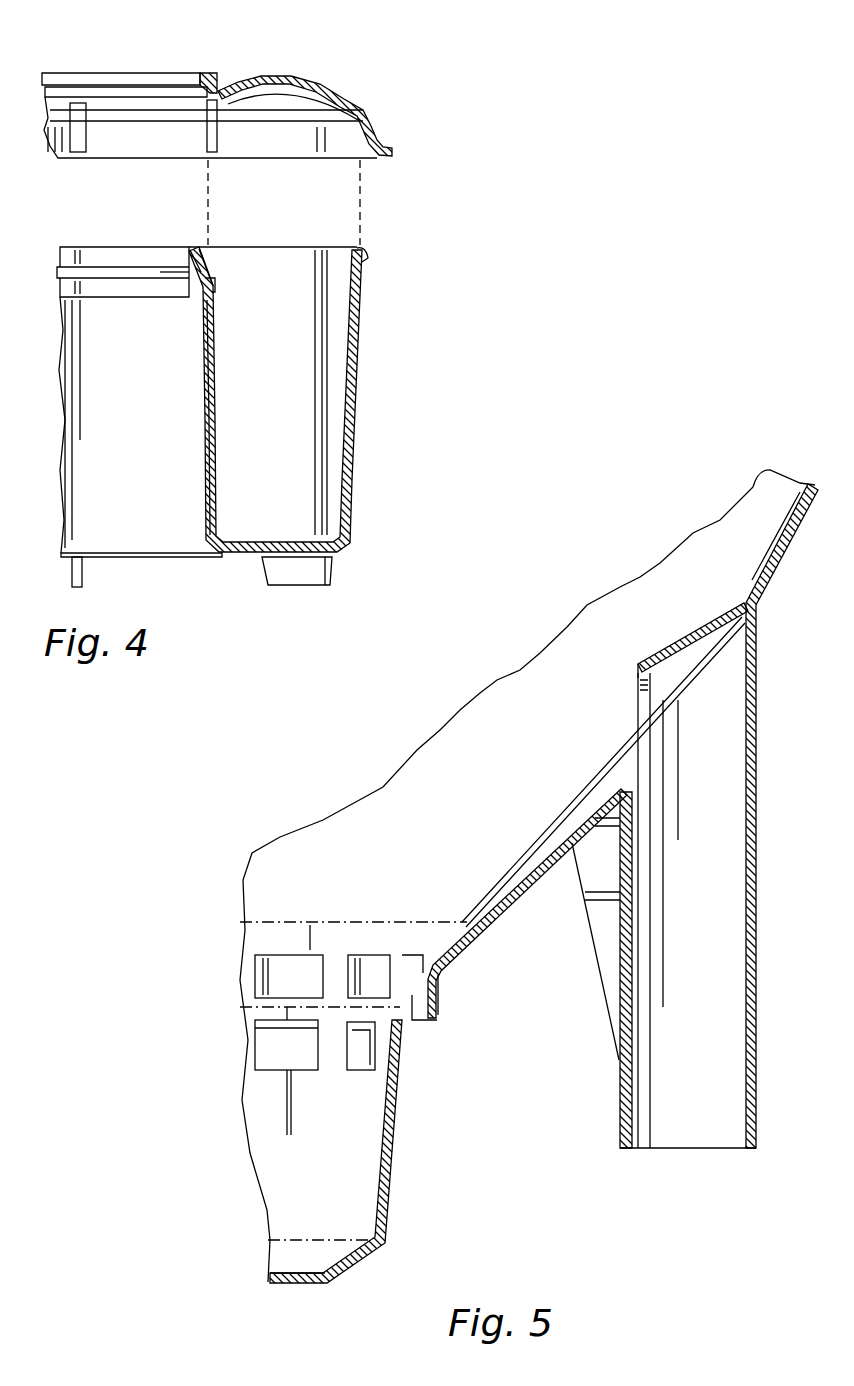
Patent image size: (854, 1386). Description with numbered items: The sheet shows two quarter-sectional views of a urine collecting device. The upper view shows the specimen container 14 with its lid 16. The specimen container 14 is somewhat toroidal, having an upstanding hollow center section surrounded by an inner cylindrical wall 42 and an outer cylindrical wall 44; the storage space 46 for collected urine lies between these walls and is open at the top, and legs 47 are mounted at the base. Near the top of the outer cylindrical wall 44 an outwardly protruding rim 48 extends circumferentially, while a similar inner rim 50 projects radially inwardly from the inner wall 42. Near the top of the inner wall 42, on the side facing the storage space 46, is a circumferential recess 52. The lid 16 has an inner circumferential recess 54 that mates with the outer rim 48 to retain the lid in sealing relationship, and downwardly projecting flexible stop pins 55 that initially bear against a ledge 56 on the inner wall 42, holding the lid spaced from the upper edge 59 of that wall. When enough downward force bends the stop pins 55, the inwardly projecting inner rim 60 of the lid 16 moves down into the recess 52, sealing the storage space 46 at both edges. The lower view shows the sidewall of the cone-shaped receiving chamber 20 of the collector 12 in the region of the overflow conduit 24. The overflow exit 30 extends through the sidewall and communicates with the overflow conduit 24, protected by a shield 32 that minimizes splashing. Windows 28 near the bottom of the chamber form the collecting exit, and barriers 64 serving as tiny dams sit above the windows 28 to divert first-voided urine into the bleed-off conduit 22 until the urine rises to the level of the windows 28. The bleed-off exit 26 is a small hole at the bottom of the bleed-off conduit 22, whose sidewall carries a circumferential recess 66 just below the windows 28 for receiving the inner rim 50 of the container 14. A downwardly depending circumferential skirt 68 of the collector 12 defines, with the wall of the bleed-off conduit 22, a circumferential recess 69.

In FIG. 5, the collector 12 is at (676, 502).
In FIG. 4, the specimen container 14 is at (368, 368).
In FIG. 4, the lid 16 is at (342, 82).
In FIG. 5, the receiving chamber 20 is at (545, 845).
In FIG. 5, the bleed-off conduit 22 is at (383, 1218).
In FIG. 5, the overflow conduit 24 is at (760, 878).
In FIG. 5, the bleed-off exit 26 is at (290, 1283).
In FIG. 5, the windows 28 is at (300, 1052).
In FIG. 5, the overflow exit 30 is at (652, 712).
In FIG. 5, the shield 32 is at (692, 648).
In FIG. 4, the inner cylindrical wall 42 is at (206, 442).
In FIG. 4, the outer cylindrical wall 44 is at (360, 428).
In FIG. 4, the storage space 46 is at (295, 350).
In FIG. 4, the legs 47 is at (72, 580).
In FIG. 4, the outer rim 48 is at (366, 258).
In FIG. 4, the inner rim 50 is at (178, 278).
In FIG. 4, the recess 52 is at (210, 262).
In FIG. 4, the inner circumferential recess 54 is at (355, 125).
In FIG. 4, the stop pins 55 is at (78, 148).
In FIG. 4, the ledge 56 is at (216, 290).
In FIG. 4, the upper edge 59 is at (192, 250).
In FIG. 4, the inner rim 60 is at (212, 78).
In FIG. 5, the barriers 64 is at (275, 960).
In FIG. 5, the circumferential recess 66 is at (392, 1078).
In FIG. 5, the skirt 68 is at (440, 1002).
In FIG. 5, the circumferential recess 69 is at (428, 1018).